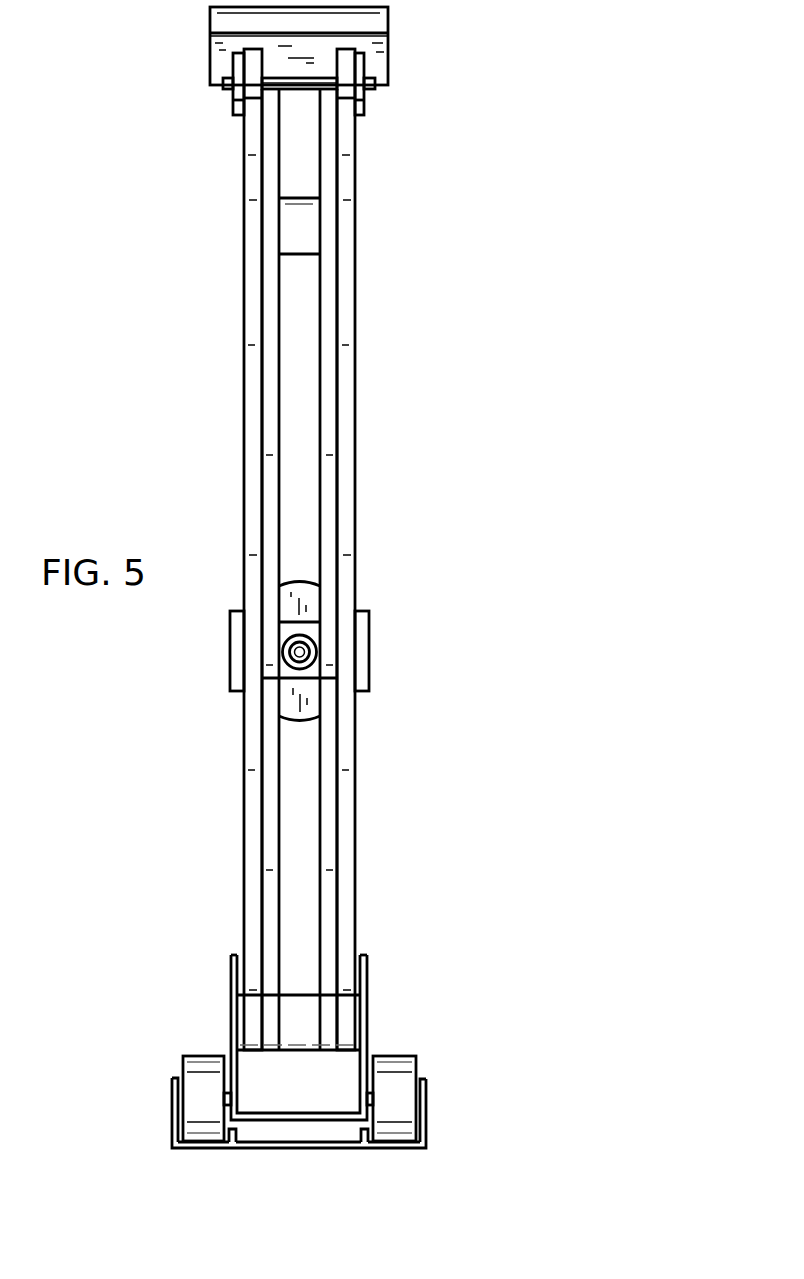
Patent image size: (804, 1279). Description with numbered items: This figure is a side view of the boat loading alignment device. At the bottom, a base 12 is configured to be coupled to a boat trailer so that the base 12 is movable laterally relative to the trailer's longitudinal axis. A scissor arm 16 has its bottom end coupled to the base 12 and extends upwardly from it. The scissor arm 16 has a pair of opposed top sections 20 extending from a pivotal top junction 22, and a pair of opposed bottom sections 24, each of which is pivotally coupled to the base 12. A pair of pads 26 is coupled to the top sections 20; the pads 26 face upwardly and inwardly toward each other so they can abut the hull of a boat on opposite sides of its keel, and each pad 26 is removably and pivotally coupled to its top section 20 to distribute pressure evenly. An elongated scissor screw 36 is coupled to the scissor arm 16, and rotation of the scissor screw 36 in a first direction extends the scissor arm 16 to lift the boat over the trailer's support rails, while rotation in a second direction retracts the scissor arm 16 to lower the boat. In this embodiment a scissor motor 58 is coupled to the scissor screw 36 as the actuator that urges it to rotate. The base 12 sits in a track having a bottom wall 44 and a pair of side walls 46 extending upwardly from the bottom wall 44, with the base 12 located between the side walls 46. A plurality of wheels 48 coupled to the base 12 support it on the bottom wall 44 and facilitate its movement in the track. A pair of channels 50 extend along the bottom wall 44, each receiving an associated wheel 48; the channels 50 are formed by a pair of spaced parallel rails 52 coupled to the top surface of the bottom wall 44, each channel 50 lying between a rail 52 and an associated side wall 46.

The base 12 is at (365, 993).
The scissor arm 16 is at (345, 465).
The top sections 20 is at (252, 143).
The pivotal top junction 22 is at (385, 215).
The bottom sections 24 is at (352, 814).
The pads 26 is at (378, 20).
The scissor screw 36 is at (299, 652).
The bottom wall 44 is at (300, 1143).
The side walls 46 is at (178, 1093).
The wheels 48 is at (205, 1060).
The channels 50 is at (193, 1137).
The rails 52 is at (237, 1133).
The scissor motor 58 is at (303, 602).